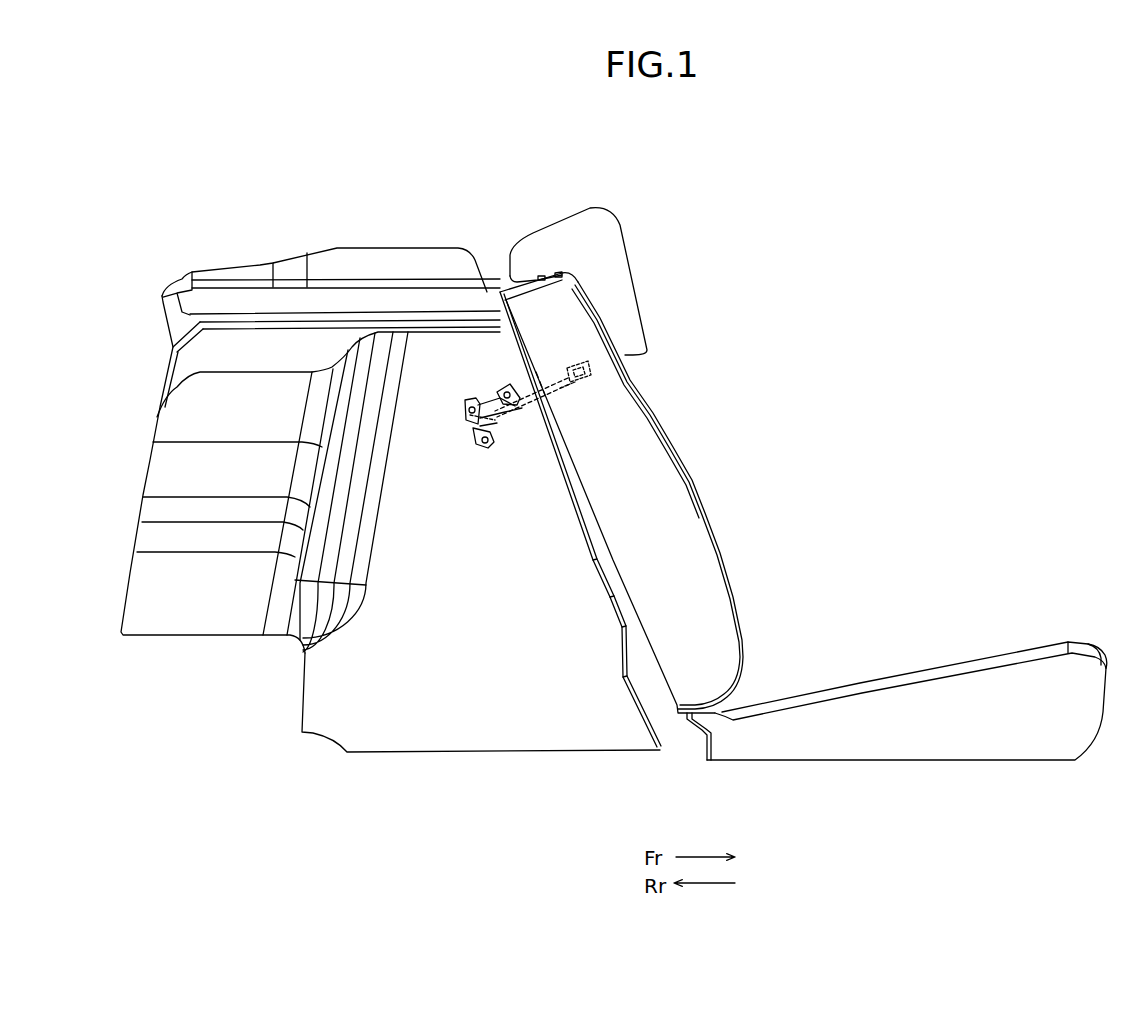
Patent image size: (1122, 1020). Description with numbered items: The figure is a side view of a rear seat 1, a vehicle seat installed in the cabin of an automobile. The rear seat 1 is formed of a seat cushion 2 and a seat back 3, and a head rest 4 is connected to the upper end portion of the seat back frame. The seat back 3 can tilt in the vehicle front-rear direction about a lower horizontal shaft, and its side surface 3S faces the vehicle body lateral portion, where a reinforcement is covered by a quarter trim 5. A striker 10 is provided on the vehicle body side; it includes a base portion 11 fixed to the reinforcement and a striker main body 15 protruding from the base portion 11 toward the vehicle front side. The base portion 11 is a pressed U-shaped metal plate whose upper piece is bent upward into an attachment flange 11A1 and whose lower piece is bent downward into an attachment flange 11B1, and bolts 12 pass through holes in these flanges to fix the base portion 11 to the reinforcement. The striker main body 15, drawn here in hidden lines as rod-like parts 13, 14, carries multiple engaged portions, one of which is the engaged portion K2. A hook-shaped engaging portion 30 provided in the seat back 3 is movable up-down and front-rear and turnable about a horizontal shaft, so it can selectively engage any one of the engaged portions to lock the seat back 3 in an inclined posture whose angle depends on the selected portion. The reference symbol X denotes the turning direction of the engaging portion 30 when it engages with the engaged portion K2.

The rear seat 1 is at (918, 362).
The seat cushion 2 is at (907, 699).
The seat back 3 is at (682, 519).
The side surface of seat back 3S is at (660, 383).
The head rest 4 is at (578, 240).
The quarter trim 5 is at (369, 258).
The striker 10 is at (500, 412).
The base portion 11 is at (496, 456).
The attachment flange 11A1 is at (492, 400).
The attachment flange 11B1 is at (507, 423).
The bolts 12 is at (505, 388).
The operating rod 13 is at (532, 397).
The rod body 14 is at (567, 389).
The striker main body 15 is at (536, 372).
The engaging portion 30 is at (578, 365).
The engaged portion K2 is at (588, 384).
The turning direction X is at (539, 353).